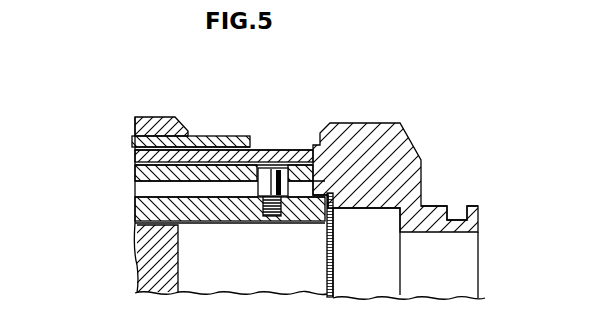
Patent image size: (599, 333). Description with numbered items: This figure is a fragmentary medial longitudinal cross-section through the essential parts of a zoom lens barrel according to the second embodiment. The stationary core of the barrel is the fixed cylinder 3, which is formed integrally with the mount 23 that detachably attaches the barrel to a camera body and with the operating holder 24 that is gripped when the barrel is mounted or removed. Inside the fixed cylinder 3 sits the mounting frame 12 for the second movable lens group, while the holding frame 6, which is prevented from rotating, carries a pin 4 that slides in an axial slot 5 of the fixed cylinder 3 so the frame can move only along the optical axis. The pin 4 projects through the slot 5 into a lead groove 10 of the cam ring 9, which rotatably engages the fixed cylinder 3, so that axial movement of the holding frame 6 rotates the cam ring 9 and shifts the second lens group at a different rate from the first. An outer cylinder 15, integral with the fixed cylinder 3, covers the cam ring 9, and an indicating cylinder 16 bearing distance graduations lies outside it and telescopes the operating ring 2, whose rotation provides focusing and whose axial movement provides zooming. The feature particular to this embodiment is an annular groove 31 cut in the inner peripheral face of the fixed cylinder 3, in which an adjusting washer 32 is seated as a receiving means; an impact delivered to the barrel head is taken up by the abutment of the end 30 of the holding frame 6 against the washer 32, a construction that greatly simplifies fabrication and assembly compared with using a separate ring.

The operating ring 2 is at (158, 121).
The indicating cylinder 16 is at (201, 136).
The outer cylinder 15 is at (233, 149).
The lead groove 10 is at (246, 168).
The pin 4 is at (289, 162).
The cam ring 9 is at (146, 172).
The axial slot 5 is at (202, 190).
The holding frame 6 is at (242, 204).
The fixed cylinder 3 is at (303, 207).
The mounting frame 12 is at (166, 268).
The operating holder 24 is at (400, 150).
The mount 23 is at (459, 212).
The annular groove 31 is at (331, 187).
The end 30 is at (331, 236).
The adjusting washer 32 is at (331, 209).